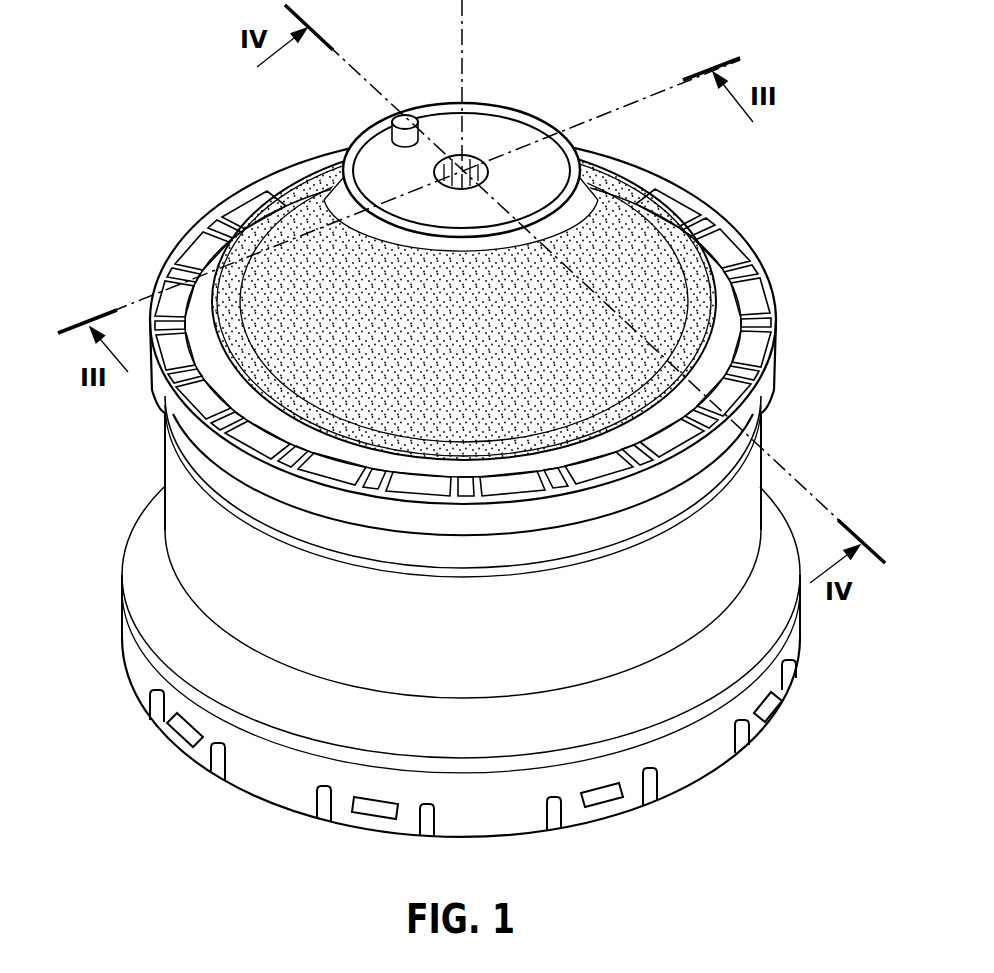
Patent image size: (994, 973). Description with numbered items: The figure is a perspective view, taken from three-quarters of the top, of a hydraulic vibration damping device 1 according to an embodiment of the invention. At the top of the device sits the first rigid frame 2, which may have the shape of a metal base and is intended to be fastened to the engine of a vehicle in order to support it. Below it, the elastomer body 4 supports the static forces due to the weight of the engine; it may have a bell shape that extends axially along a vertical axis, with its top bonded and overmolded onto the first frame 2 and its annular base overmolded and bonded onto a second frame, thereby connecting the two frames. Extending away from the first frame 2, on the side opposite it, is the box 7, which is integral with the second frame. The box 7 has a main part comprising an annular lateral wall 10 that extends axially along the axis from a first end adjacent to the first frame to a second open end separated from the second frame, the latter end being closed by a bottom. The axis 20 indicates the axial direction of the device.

The hydraulic vibration damping device 1 is at (747, 185).
The first rigid frame 2 is at (495, 133).
The elastomer body 4 is at (625, 200).
The box 7 is at (783, 482).
The annular lateral wall 10 is at (622, 627).
The longitudinal axis 20 is at (463, 23).